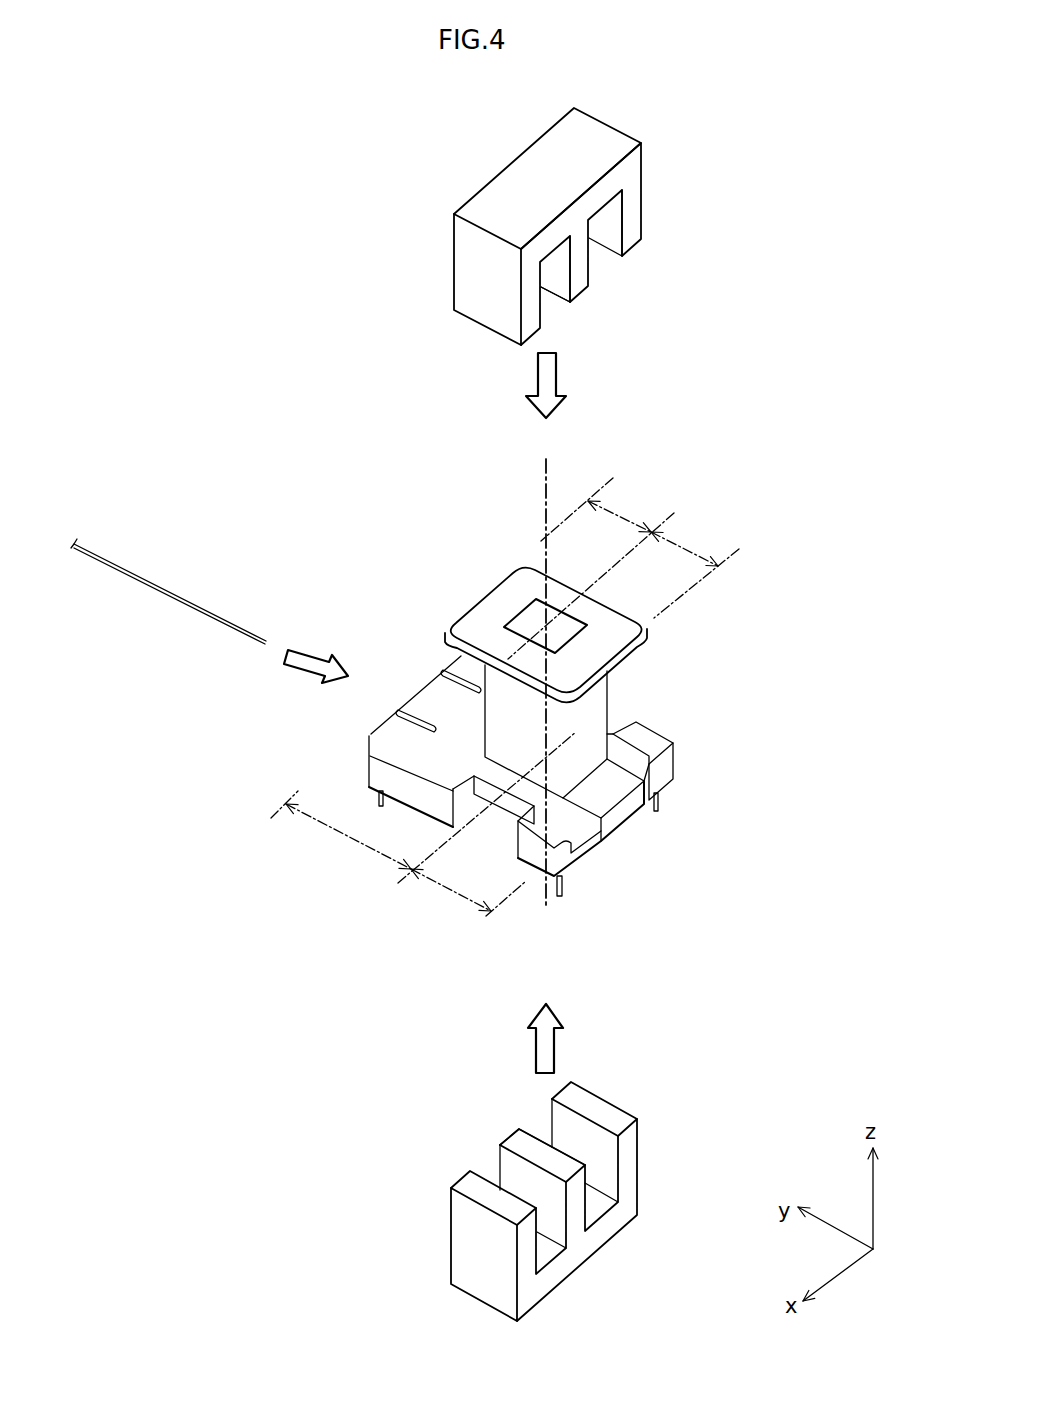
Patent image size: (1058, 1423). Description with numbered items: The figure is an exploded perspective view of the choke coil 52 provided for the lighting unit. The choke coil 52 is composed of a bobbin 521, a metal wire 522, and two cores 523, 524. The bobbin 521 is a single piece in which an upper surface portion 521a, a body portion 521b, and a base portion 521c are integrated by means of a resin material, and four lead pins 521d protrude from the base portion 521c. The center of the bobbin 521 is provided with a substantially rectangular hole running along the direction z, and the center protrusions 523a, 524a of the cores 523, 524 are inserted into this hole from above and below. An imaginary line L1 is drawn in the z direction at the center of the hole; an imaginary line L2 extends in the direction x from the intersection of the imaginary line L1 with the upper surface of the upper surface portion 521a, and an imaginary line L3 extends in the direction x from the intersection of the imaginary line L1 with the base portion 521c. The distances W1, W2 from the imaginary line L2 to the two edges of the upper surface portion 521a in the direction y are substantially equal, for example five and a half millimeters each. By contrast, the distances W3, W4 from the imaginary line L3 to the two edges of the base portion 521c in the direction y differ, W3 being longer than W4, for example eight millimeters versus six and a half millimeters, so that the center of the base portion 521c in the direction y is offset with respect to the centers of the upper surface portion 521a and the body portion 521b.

The choke coil 52 is at (650, 100).
The bobbin 521 is at (376, 725).
The upper surface portion 521a is at (445, 626).
The body portion 521b is at (487, 703).
The base portion 521c is at (422, 751).
The lead pins 521d is at (657, 812).
The metal wire 522 is at (150, 578).
The core 523 is at (522, 170).
The center protrusion 523a is at (590, 293).
The core 524 is at (590, 1240).
The center protrusion 524a is at (518, 1133).
The distance W1 is at (603, 509).
The distance W2 is at (695, 570).
The distance W3 is at (341, 831).
The distance W4 is at (465, 895).
The imaginary line L1 is at (548, 725).
The imaginary line L2 is at (613, 563).
The imaginary line L3 is at (432, 855).